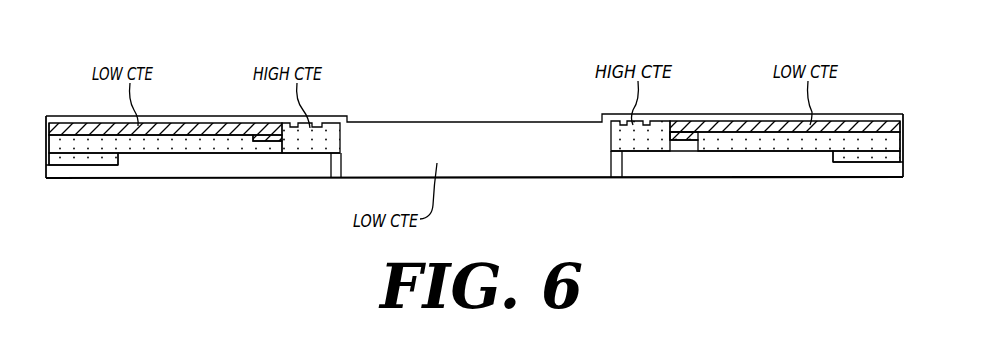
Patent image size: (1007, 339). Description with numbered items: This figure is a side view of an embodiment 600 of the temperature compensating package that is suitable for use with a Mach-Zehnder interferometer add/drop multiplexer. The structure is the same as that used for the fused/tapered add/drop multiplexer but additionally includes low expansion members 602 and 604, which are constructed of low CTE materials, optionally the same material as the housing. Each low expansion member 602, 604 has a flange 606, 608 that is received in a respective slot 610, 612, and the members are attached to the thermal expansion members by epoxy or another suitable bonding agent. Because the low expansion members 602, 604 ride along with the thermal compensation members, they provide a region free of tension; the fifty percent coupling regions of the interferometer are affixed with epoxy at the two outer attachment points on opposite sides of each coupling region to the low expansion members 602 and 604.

The temperature compensating package 600 is at (760, 49).
The low expansion member 602 is at (55, 124).
The low expansion member 604 is at (897, 120).
The flange 606 is at (689, 140).
The flange 608 is at (262, 142).
The slot 610 is at (667, 143).
The slot 612 is at (281, 146).